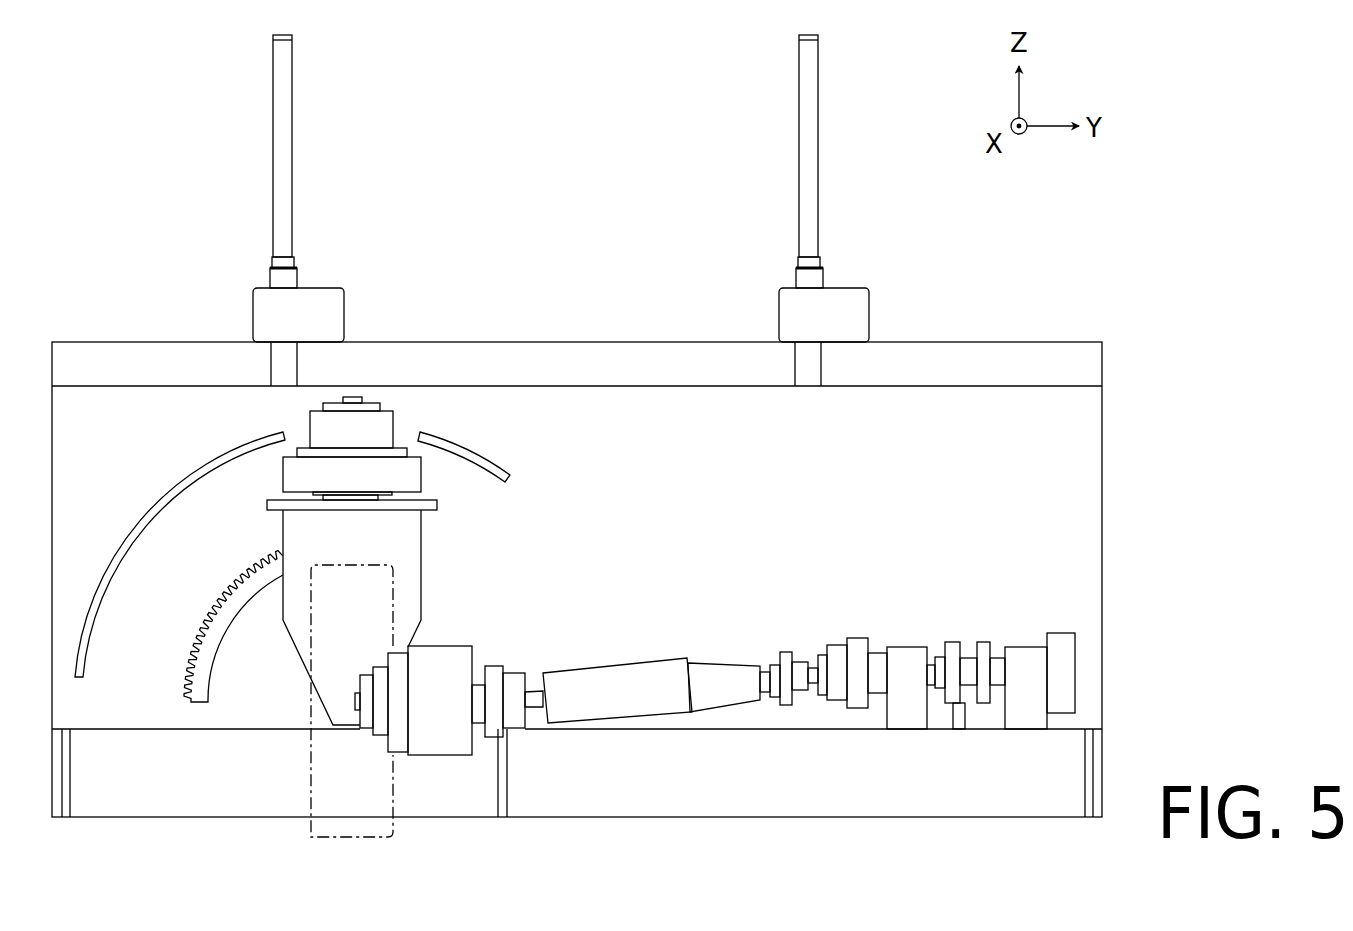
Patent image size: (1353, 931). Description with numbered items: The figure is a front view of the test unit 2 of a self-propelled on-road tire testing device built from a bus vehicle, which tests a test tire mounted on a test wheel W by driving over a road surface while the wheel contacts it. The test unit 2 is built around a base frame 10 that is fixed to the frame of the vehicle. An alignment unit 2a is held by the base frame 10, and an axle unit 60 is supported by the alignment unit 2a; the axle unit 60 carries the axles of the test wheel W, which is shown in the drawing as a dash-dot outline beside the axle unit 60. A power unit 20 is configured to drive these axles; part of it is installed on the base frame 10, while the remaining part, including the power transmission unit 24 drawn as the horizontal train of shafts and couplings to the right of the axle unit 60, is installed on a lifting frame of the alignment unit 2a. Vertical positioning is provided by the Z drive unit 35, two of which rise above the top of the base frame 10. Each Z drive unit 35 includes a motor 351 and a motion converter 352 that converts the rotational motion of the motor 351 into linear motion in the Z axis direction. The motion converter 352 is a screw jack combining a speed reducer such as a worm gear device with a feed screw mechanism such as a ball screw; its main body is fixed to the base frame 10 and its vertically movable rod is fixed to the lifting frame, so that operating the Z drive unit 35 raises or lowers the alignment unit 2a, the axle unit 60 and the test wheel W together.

The test unit 2 is at (180, 224).
The alignment unit 2a is at (536, 476).
The base frame 10 is at (948, 342).
The power unit 20 is at (881, 638).
The power transmission unit 24 is at (893, 625).
The Z drive unit 35 is at (830, 241).
The motor 351 is at (345, 320).
The motion converter 352 is at (298, 278).
The axle unit 60 is at (449, 639).
The test wheel W is at (393, 803).